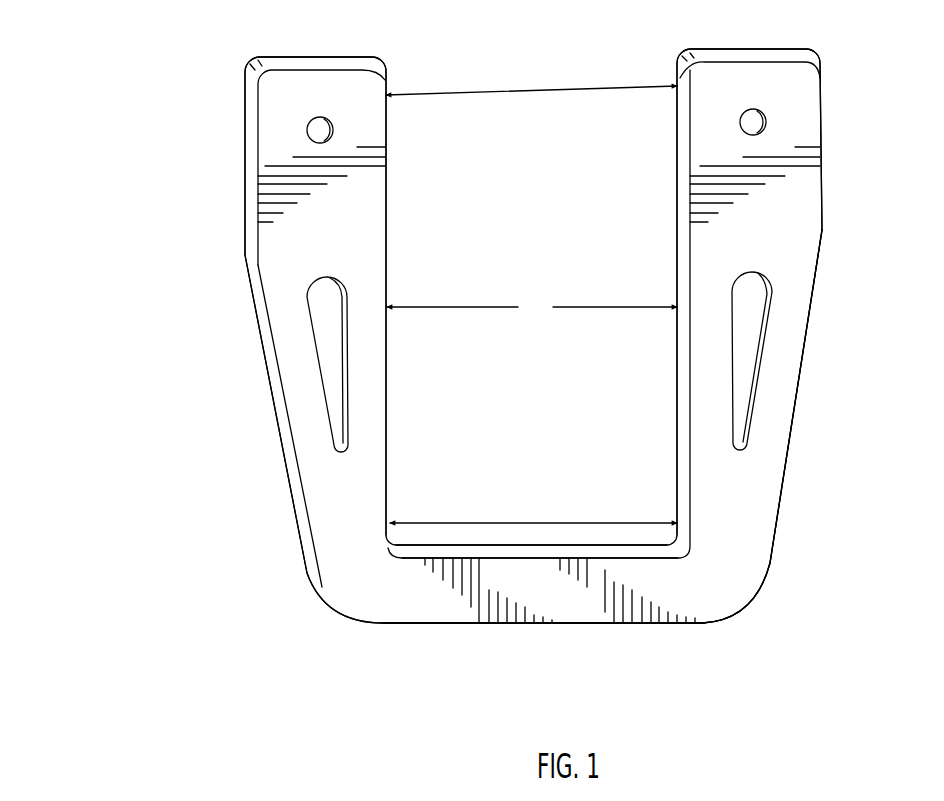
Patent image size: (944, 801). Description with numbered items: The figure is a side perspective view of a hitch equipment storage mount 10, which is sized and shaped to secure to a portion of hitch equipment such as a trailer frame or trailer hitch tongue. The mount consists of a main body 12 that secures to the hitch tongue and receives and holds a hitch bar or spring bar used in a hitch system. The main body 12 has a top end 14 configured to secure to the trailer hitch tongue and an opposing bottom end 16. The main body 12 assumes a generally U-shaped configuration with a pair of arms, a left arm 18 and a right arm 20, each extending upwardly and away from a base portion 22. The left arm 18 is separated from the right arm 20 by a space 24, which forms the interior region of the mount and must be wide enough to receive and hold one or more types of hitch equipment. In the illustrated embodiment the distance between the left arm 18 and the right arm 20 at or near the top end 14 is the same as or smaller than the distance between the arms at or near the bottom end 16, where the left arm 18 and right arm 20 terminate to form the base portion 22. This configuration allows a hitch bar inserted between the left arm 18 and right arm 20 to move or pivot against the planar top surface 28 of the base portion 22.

The hitch equipment storage mount 10 is at (110, 212).
The main body 12 is at (798, 392).
The top end 14 is at (818, 72).
The bottom end 16 is at (748, 606).
The left arm 18 is at (247, 255).
The right arm 20 is at (822, 232).
The base portion 22 is at (533, 624).
The space 24 is at (532, 309).
The planar top surface 28 is at (596, 550).